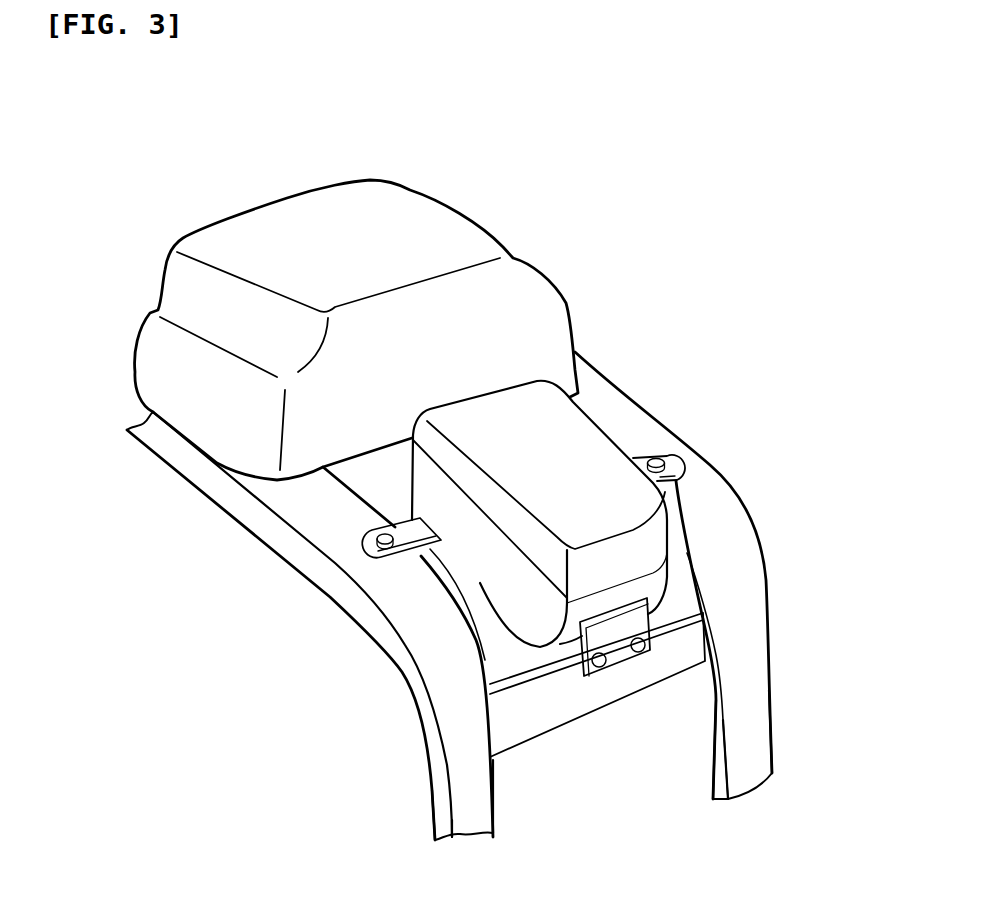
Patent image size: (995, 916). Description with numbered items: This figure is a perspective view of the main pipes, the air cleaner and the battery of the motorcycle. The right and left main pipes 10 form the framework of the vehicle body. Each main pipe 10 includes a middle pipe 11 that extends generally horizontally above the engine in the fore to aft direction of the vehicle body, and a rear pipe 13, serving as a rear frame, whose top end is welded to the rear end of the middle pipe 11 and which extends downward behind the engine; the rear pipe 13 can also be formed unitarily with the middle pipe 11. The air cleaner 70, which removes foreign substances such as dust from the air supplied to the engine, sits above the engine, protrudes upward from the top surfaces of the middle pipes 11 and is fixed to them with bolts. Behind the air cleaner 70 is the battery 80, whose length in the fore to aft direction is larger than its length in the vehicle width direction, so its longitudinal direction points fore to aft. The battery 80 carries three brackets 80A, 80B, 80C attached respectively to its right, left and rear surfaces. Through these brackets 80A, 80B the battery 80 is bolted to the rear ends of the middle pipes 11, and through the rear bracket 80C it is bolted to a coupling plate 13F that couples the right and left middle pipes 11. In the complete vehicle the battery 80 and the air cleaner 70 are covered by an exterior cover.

The air cleaner 70 is at (402, 218).
The main pipe 10 is at (493, 556).
The middle pipe 11 is at (327, 517).
The rear pipe 13 is at (463, 738).
The coupling plate 13F is at (560, 705).
The battery 80 is at (522, 572).
The bracket 80A is at (406, 557).
The bracket 80B is at (677, 461).
The bracket 80C is at (613, 650).